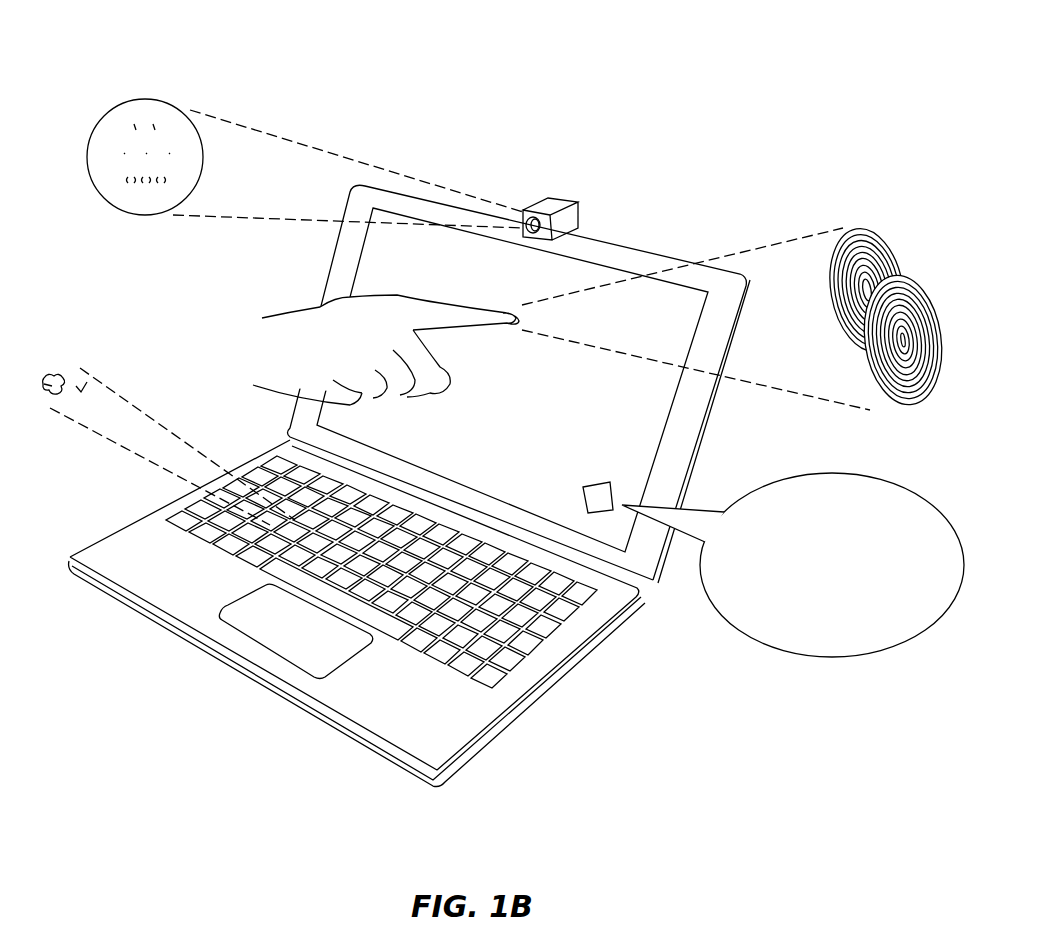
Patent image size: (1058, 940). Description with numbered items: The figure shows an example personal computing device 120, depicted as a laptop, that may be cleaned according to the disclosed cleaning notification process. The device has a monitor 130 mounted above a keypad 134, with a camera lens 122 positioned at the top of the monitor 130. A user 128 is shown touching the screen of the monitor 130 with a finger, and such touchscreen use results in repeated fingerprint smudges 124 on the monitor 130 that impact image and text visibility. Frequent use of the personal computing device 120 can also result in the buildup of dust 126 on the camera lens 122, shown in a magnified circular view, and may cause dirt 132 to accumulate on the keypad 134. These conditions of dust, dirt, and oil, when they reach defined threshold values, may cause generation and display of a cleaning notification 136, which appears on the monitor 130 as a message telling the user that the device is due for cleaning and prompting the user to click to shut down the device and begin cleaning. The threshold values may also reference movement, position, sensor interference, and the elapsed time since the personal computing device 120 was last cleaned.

The personal computing device 120 is at (654, 93).
The camera lens 122 is at (545, 200).
The fingerprint smudges 124 is at (863, 228).
The dust 126 is at (157, 100).
The user 128 is at (305, 303).
The monitor 130 is at (703, 432).
The dirt 132 is at (65, 370).
The keypad 134 is at (507, 625).
The cleaning notification 136 is at (857, 657).